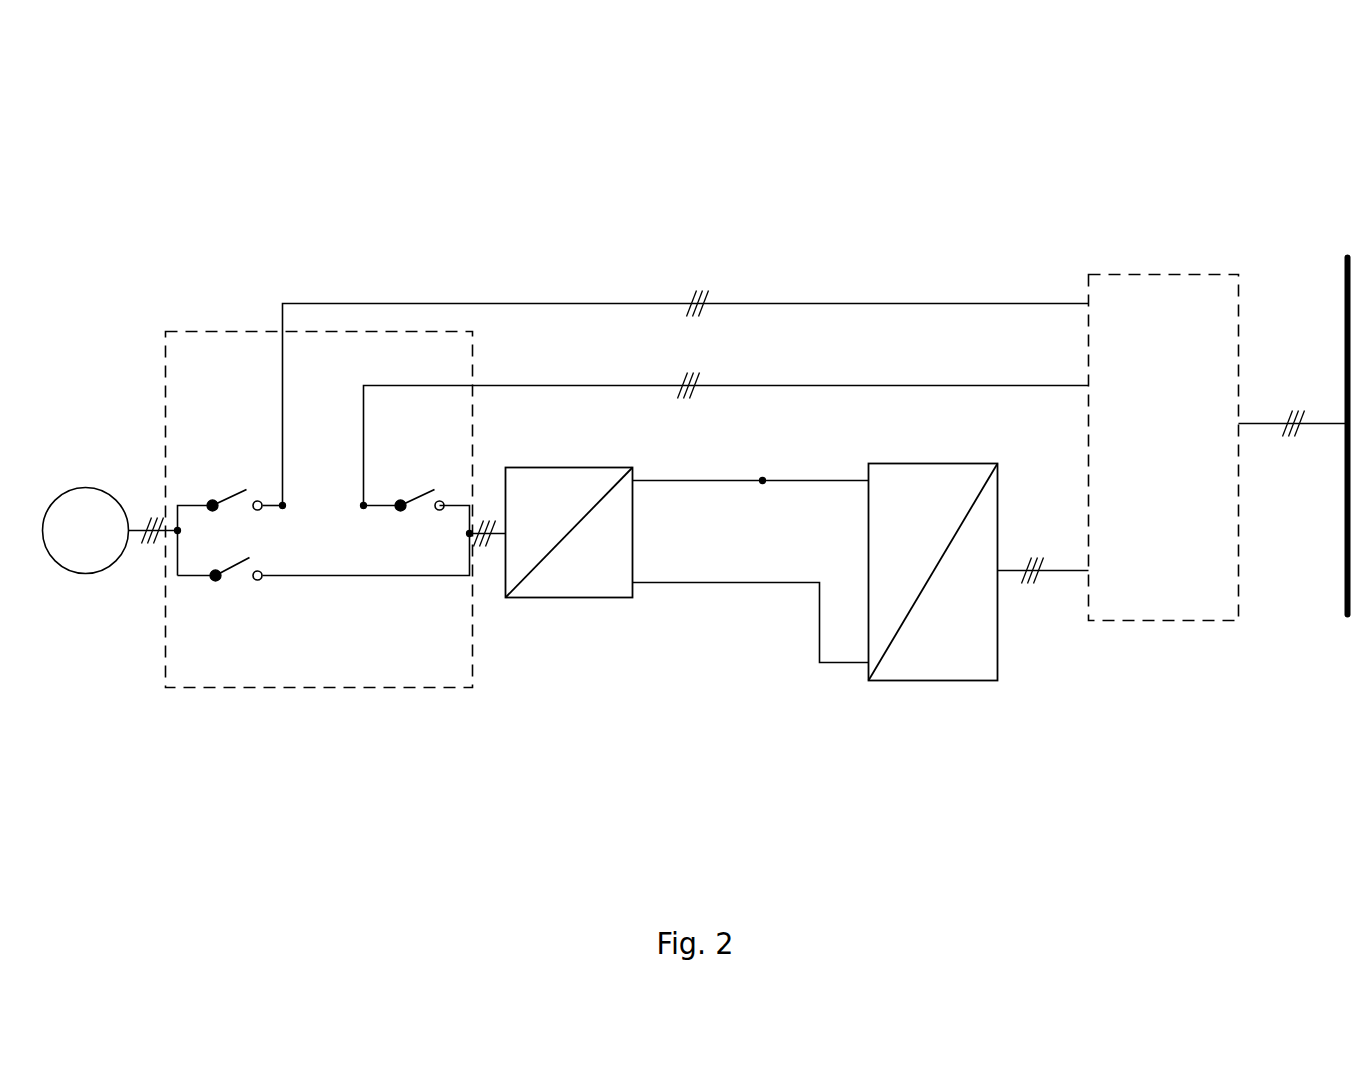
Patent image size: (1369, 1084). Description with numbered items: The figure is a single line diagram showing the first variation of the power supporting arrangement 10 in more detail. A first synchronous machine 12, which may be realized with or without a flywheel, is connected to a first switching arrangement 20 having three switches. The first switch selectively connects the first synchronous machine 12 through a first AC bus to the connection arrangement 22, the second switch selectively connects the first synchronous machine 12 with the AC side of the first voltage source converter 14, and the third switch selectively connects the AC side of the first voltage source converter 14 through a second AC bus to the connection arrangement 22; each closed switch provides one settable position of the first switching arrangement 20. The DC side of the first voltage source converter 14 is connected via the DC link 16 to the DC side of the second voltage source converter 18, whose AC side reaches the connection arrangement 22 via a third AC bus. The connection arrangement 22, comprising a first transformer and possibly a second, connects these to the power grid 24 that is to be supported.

The power supporting arrangement 10 is at (1097, 114).
The first synchronous machine 12 is at (110, 504).
The first voltage source converter 14 is at (569, 492).
The DC link 16 is at (751, 570).
The second voltage source converter 18 is at (979, 609).
The first switching arrangement 20 is at (231, 331).
The connection arrangement 22 is at (1218, 448).
The power grid 24 is at (1344, 396).